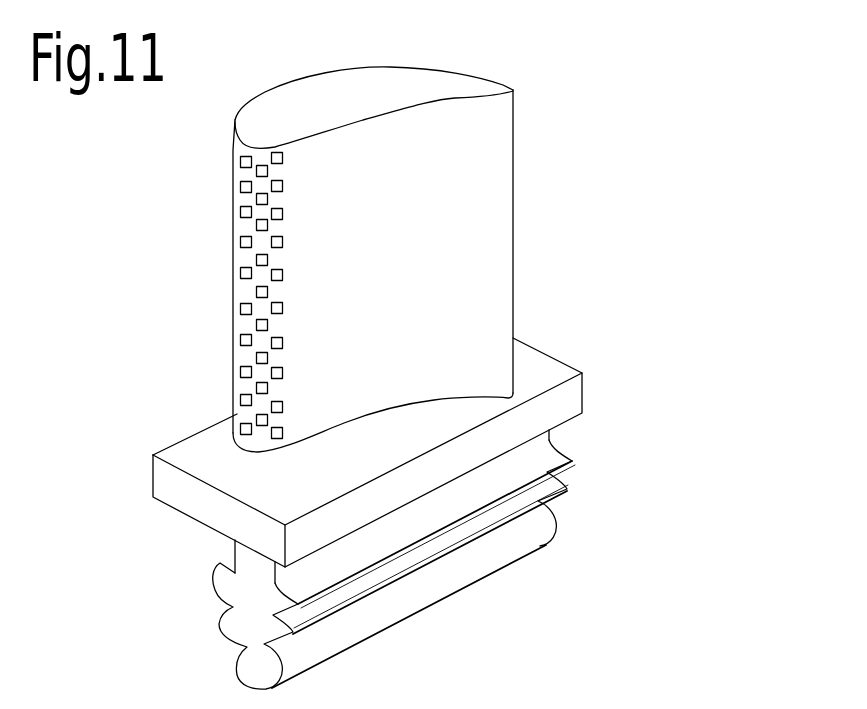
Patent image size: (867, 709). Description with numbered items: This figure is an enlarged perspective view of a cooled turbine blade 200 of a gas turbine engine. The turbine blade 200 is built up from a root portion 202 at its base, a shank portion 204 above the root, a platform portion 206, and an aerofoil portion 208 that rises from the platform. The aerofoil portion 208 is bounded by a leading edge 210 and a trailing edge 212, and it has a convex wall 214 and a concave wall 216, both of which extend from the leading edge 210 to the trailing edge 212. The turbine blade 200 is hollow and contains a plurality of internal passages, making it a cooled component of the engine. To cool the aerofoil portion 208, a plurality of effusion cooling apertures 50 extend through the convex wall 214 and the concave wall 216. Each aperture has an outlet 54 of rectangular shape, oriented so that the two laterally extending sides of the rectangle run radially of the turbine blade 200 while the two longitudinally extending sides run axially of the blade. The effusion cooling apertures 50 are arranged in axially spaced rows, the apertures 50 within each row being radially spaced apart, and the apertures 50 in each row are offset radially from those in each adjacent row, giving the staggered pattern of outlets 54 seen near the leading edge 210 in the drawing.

The effusion cooling apertures 50 is at (275, 343).
The outlet 54 is at (247, 163).
The turbine blade 200 is at (546, 167).
The root portion 202 is at (540, 532).
The shank portion 204 is at (258, 568).
The platform portion 206 is at (557, 407).
The aerofoil portion 208 is at (493, 280).
The leading edge 210 is at (233, 265).
The trailing edge 212 is at (513, 205).
The convex wall 214 is at (315, 78).
The concave wall 216 is at (427, 120).